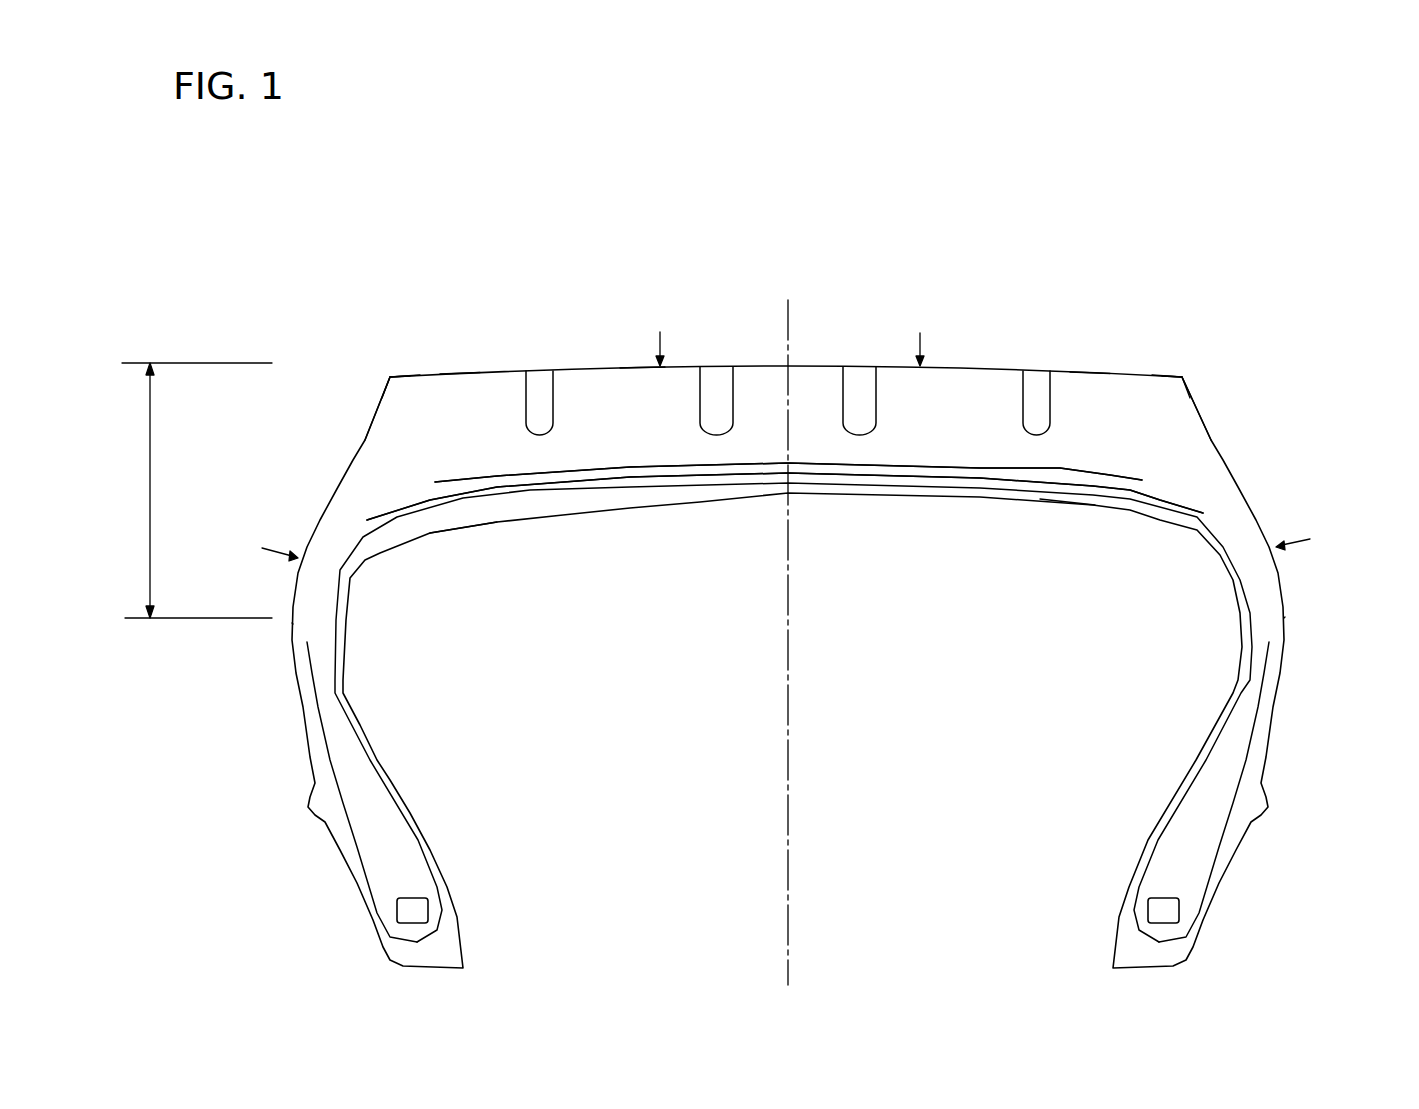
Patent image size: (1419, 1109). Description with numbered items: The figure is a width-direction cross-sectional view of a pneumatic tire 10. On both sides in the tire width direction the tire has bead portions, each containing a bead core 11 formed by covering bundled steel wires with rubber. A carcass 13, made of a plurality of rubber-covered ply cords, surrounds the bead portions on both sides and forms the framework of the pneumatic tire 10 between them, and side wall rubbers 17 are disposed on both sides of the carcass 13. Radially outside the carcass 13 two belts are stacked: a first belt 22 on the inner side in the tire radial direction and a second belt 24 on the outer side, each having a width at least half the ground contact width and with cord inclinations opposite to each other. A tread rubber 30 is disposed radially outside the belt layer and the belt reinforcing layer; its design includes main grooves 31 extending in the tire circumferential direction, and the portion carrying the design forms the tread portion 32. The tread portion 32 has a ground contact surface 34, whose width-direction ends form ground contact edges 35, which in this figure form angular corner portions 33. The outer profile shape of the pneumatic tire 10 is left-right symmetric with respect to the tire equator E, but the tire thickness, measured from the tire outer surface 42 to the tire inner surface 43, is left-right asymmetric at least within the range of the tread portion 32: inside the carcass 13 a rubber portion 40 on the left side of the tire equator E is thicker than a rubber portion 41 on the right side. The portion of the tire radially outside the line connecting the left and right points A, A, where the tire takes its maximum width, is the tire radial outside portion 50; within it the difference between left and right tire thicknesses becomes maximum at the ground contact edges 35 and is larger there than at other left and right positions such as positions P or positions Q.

The pneumatic tire 10 is at (778, 183).
The bead core 11 is at (418, 913).
The carcass 13 is at (340, 693).
The side wall rubber 17 is at (315, 731).
The first belt 22 is at (876, 476).
The second belt 24 is at (960, 470).
The tread rubber 30 is at (953, 392).
The main groove 31 is at (540, 393).
The tread portion 32 is at (642, 392).
The angular corner portion 33 is at (388, 376).
The ground contact surface 34 is at (1092, 373).
The ground contact edge 35 is at (390, 377).
The rubber portion 40 is at (516, 512).
The rubber portion 41 is at (1068, 497).
The tire outer surface 42 is at (458, 375).
The tire inner surface 43 is at (452, 532).
The tire radial outside portion 50 is at (183, 490).
The tire equator E is at (789, 363).
The position Q is at (791, 330).
The position P is at (785, 540).
The point A is at (292, 623).